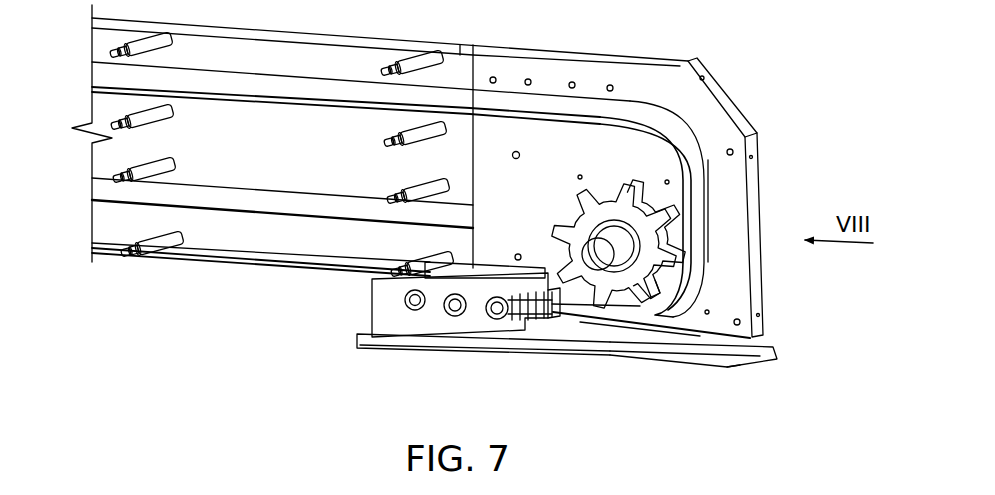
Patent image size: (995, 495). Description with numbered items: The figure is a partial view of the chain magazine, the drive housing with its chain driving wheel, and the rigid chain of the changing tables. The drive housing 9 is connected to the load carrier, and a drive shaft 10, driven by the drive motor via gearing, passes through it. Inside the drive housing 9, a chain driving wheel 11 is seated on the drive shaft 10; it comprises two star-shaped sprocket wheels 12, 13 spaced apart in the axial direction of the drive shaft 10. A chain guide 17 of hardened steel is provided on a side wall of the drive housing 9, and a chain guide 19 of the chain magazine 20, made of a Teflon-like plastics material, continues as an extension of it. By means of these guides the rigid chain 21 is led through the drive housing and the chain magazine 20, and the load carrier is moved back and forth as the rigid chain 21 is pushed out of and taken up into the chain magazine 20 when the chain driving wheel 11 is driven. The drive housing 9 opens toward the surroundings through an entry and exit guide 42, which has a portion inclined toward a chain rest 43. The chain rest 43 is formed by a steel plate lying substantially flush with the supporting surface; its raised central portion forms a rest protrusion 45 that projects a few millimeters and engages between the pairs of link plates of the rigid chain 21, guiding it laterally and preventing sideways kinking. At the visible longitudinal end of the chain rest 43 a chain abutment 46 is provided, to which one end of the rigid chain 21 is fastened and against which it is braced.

The drive housing 9 is at (733, 85).
The drive shaft 10 is at (595, 258).
The chain driving wheel 11 is at (628, 328).
The star-shaped sprocket wheel 12 is at (663, 300).
The star-shaped sprocket wheel 13 is at (688, 273).
The chain guide 17 is at (678, 136).
The chain guide 19 is at (105, 80).
The chain magazine 20 is at (274, 160).
The rigid chain 21 is at (415, 332).
The entry and exit guide 42 is at (580, 273).
The chain rest 43 is at (765, 382).
The rest protrusion 45 is at (757, 356).
The chain abutment 46 is at (377, 302).